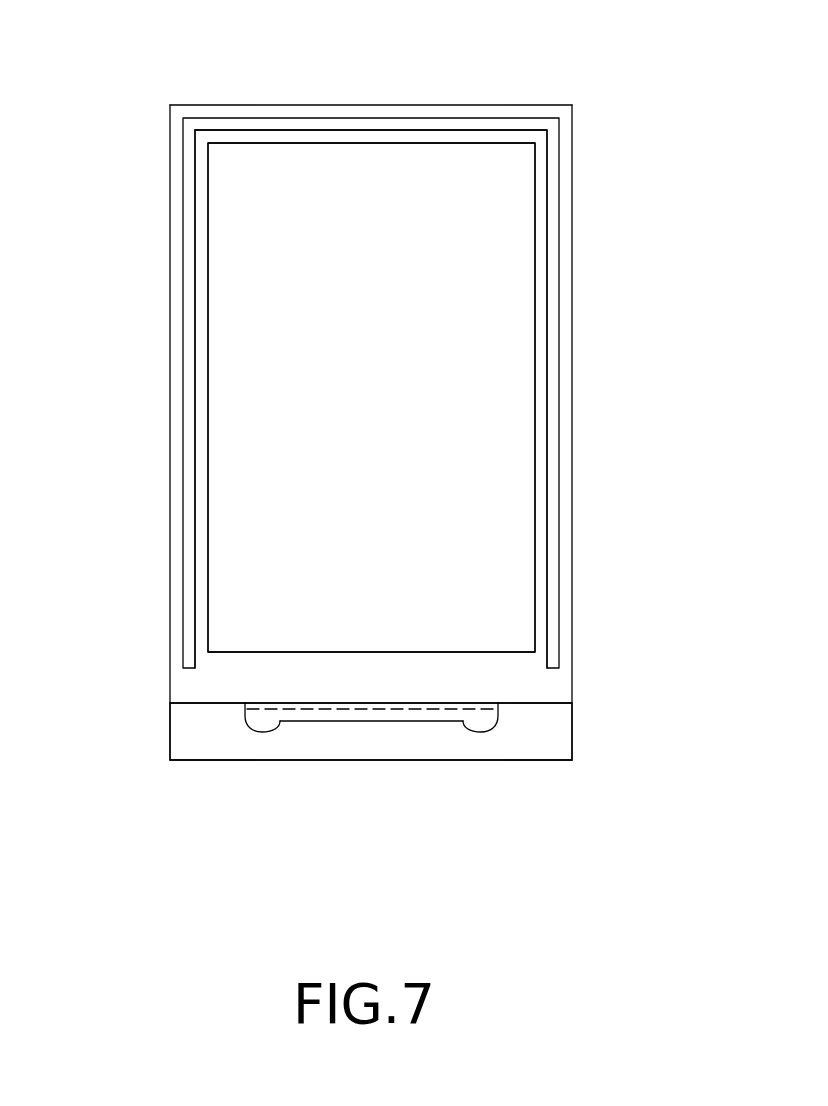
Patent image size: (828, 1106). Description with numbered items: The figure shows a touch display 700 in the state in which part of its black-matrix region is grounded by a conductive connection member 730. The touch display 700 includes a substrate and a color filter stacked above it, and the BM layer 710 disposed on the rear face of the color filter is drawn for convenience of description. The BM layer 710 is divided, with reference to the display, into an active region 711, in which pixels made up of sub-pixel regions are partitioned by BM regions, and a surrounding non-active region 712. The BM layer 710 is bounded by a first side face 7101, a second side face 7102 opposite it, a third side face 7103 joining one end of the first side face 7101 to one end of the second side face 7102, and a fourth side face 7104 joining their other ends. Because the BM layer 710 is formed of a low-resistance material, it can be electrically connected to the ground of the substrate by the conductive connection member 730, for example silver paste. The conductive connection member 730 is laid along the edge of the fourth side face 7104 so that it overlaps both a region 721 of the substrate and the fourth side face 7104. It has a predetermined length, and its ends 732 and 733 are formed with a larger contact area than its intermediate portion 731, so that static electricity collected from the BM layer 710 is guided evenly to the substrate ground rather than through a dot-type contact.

The touch display 700 is at (600, 87).
The BM layer 710 is at (574, 190).
The first side face 7101 is at (170, 385).
The second side face 7102 is at (572, 386).
The third side face 7103 is at (366, 105).
The fourth side face 7104 is at (548, 705).
The active region 711 is at (482, 262).
The non-active region 712 is at (500, 135).
The region of the substrate 721 is at (190, 263).
The conductive connection member 730 is at (180, 762).
The intermediate portion 731 is at (405, 722).
The end of the conductive connection member 732 is at (252, 733).
The end of the conductive connection member 733 is at (470, 733).